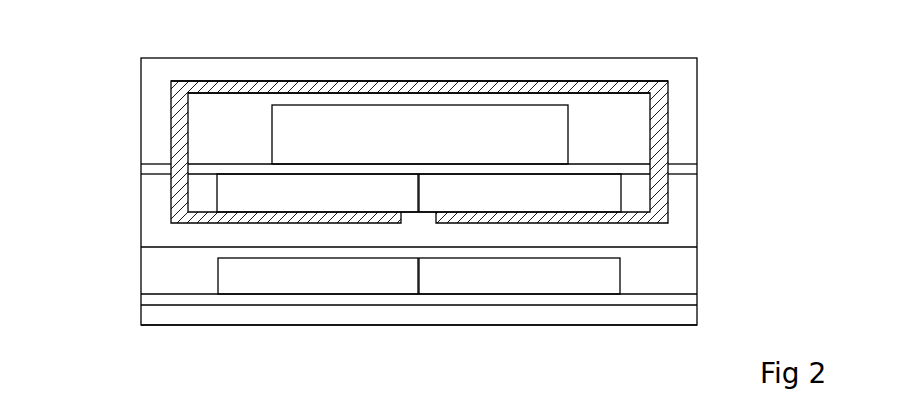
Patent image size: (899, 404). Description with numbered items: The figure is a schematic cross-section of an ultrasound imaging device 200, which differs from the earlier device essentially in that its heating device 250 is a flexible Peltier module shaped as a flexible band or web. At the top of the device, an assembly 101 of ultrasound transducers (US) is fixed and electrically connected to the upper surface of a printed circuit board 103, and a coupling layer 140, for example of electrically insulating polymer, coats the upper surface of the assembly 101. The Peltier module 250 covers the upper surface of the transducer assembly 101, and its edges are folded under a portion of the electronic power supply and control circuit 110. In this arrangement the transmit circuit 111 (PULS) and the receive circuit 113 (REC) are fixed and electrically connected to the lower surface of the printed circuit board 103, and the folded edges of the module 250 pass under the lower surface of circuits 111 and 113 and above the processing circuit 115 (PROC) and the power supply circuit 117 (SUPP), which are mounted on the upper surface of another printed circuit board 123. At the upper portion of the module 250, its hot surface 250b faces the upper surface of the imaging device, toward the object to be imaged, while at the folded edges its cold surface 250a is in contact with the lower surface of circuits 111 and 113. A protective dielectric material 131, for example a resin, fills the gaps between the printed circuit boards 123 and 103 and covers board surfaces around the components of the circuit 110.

The ultrasound imaging device 200 is at (141, 38).
The heating device 250 is at (672, 92).
The cold surface 250a is at (622, 103).
The hot surface 250b is at (640, 73).
The coupling layer 140 is at (682, 107).
The assembly of ultrasound transducers 101 is at (568, 133).
The printed circuit board 103 is at (687, 170).
The transmit circuit 111 is at (188, 192).
The receive circuit 113 is at (593, 193).
The processing circuit 115 is at (218, 266).
The power supply circuit 117 is at (598, 277).
The printed circuit board 123 is at (683, 300).
The protective dielectric material 131 is at (148, 187).
The electronic power supply and control circuit 110 is at (102, 249).